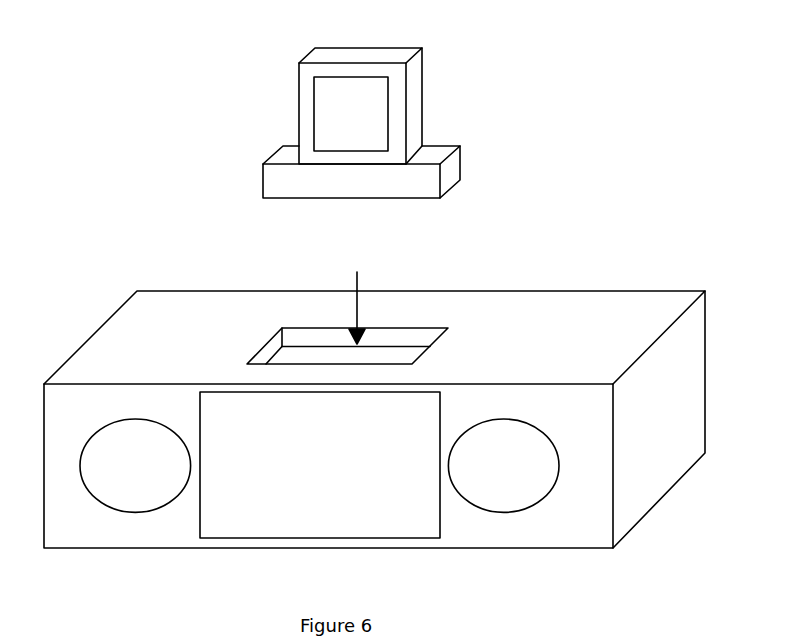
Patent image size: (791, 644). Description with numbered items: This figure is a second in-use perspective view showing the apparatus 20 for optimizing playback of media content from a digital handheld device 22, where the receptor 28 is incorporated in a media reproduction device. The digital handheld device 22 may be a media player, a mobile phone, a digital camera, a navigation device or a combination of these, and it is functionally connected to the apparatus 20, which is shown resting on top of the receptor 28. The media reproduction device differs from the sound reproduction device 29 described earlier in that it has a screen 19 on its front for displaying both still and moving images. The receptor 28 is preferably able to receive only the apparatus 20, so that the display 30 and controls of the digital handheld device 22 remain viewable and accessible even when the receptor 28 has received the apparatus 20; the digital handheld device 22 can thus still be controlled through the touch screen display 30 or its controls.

The screen 19 is at (387, 524).
The apparatus 20 is at (272, 181).
The digital handheld device 22 is at (412, 125).
The receptor 28 is at (283, 357).
The sound reproduction device 29 is at (96, 345).
The display 30 is at (327, 89).